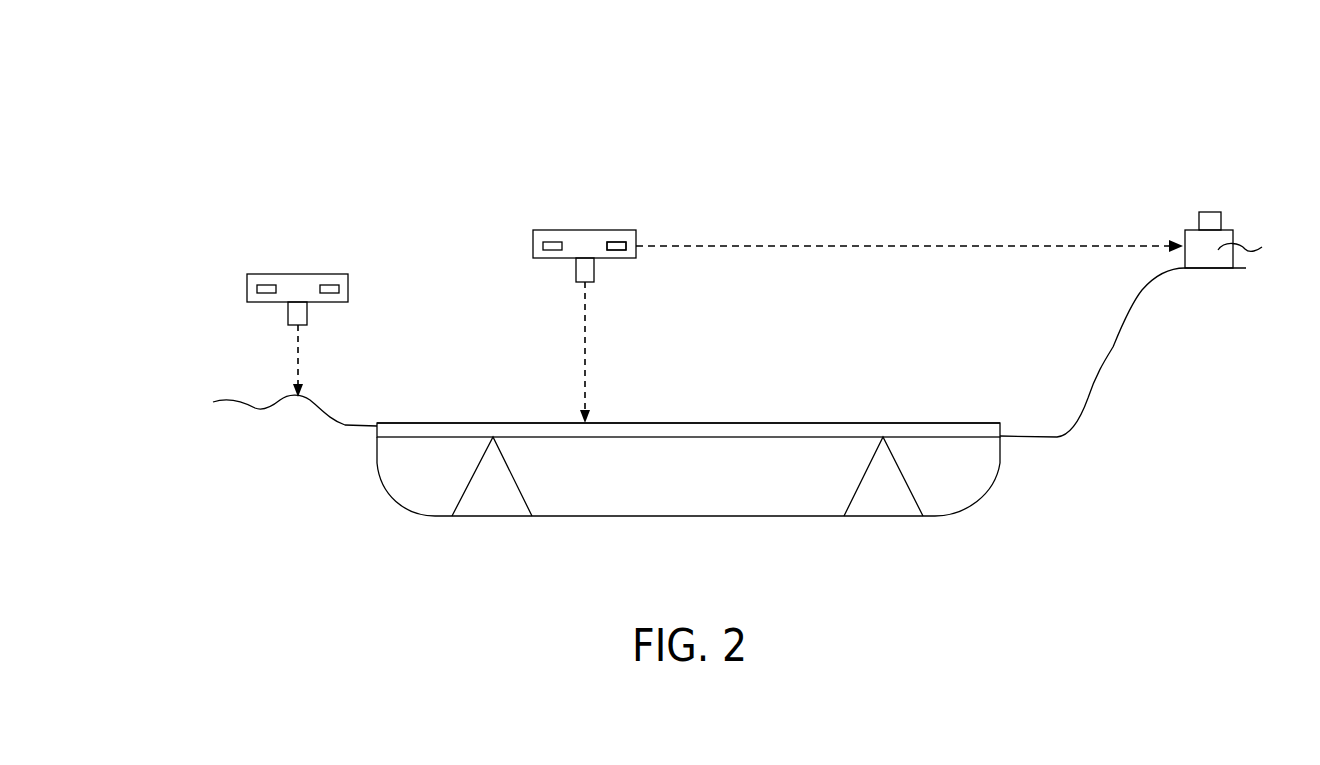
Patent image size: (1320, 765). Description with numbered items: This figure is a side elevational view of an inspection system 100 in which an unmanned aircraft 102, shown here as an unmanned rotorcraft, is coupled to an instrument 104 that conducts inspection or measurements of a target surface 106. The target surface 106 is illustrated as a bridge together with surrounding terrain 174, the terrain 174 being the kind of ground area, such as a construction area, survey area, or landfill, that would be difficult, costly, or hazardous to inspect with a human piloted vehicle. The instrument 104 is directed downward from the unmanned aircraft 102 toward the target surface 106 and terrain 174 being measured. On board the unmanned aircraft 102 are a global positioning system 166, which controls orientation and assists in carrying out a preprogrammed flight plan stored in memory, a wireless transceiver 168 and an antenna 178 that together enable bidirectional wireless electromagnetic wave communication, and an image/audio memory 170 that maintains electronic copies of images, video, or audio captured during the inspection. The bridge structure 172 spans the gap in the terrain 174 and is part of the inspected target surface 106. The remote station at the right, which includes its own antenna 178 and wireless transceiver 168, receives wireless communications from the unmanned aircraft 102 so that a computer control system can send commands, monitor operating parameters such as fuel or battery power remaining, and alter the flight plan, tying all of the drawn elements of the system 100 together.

The inspection system 100 is at (968, 116).
The unmanned aircraft 102 is at (300, 274).
The instrument 104 is at (288, 318).
The target surface 106 is at (275, 418).
The global positioning system 166 is at (259, 276).
The wireless transceiver 168 is at (624, 232).
The image/audio memory 170 is at (616, 246).
The tank 172 is at (733, 428).
The terrain 174 is at (316, 408).
The antenna 178 is at (1203, 212).